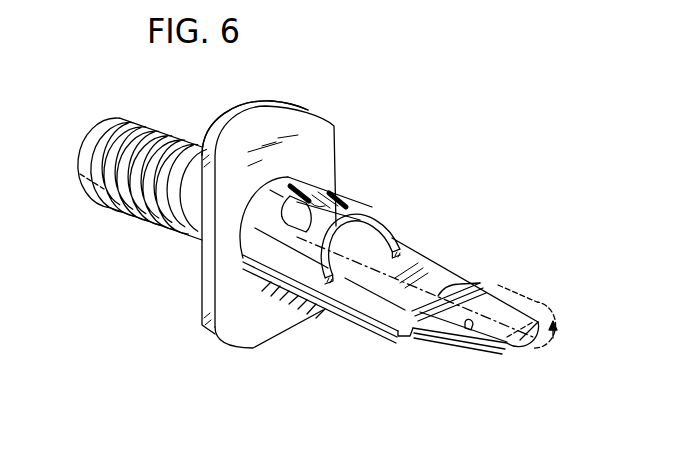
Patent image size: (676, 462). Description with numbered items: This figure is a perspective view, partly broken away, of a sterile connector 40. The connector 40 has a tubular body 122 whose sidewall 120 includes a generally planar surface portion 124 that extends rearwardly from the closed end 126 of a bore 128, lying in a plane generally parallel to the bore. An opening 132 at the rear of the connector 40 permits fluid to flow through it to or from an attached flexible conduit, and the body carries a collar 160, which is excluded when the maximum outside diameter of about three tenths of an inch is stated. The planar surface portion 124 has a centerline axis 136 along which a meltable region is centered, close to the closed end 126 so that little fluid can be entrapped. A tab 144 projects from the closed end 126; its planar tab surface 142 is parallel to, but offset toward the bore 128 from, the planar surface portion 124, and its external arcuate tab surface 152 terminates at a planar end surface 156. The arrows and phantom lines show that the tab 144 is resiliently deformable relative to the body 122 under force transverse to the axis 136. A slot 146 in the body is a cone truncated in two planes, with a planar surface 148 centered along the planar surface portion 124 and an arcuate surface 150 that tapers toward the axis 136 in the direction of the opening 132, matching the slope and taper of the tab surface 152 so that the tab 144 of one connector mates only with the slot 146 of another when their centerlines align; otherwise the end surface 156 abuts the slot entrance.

The connector 40 is at (423, 145).
The sidewall 120 is at (280, 247).
The tubular body 122 is at (318, 328).
The planar surface portion 124 is at (423, 263).
The closed end 126 is at (412, 318).
The bore 128 is at (79, 172).
The opening 132 is at (97, 131).
The centerline axis 136 is at (478, 286).
The planar tab surface 142 is at (537, 310).
The tab 144 is at (545, 315).
The slot 146 is at (398, 241).
The planar surface 148 is at (356, 272).
The arcuate surface 150 is at (332, 197).
The external arcuate tab surface 152 is at (440, 336).
The planar end surface 156 is at (564, 349).
The collar 160 is at (298, 103).